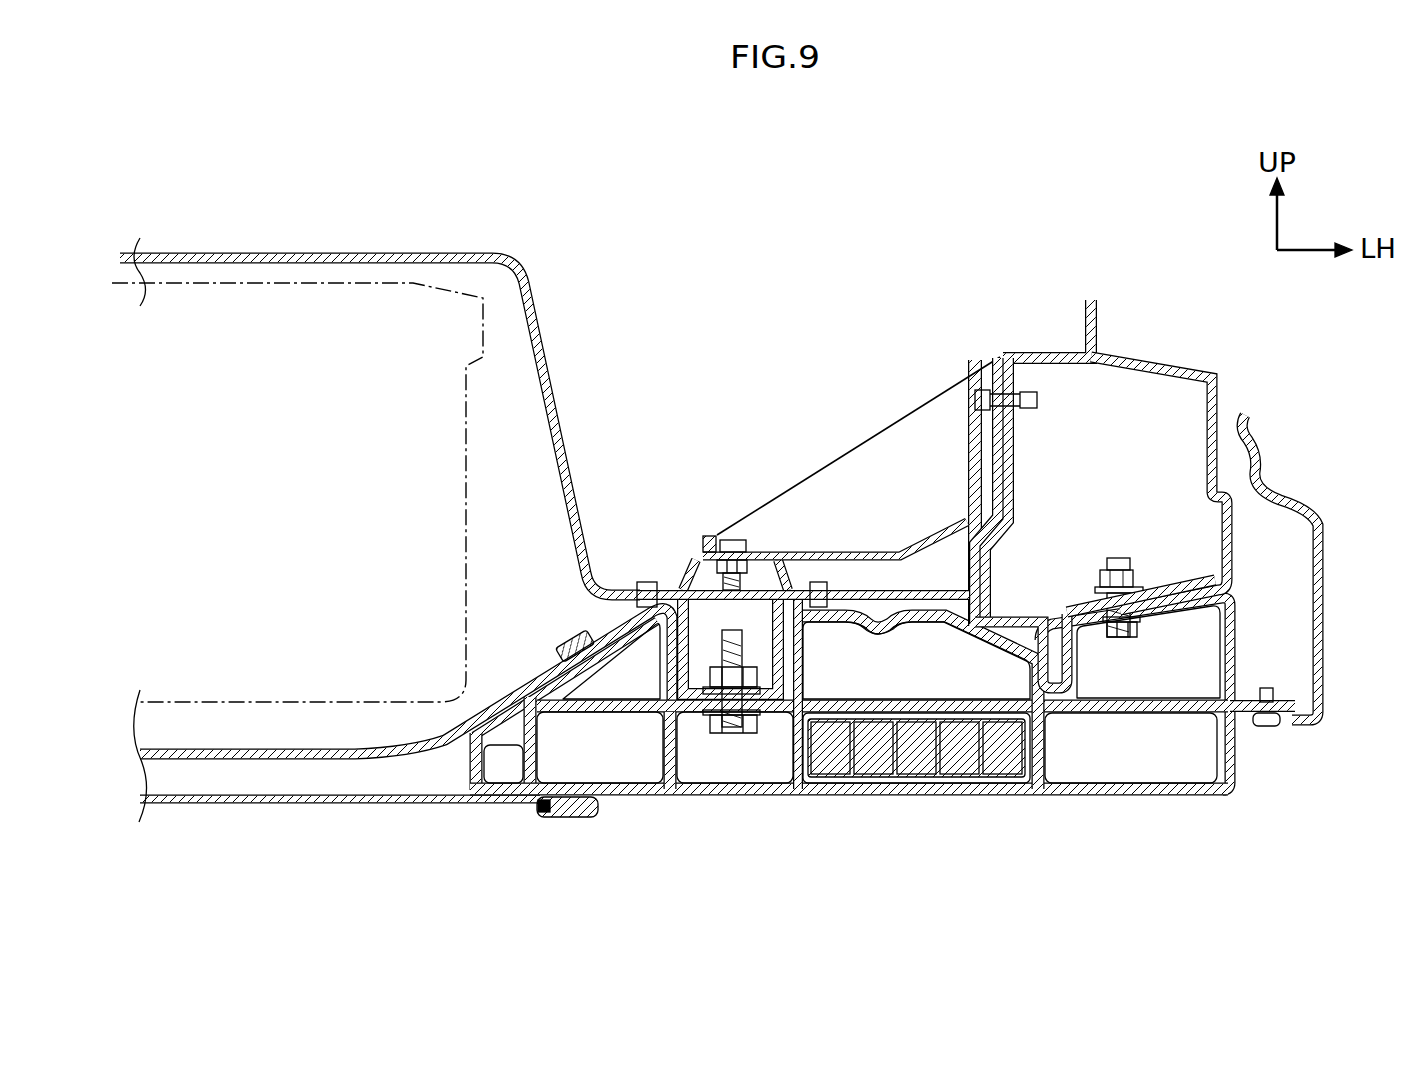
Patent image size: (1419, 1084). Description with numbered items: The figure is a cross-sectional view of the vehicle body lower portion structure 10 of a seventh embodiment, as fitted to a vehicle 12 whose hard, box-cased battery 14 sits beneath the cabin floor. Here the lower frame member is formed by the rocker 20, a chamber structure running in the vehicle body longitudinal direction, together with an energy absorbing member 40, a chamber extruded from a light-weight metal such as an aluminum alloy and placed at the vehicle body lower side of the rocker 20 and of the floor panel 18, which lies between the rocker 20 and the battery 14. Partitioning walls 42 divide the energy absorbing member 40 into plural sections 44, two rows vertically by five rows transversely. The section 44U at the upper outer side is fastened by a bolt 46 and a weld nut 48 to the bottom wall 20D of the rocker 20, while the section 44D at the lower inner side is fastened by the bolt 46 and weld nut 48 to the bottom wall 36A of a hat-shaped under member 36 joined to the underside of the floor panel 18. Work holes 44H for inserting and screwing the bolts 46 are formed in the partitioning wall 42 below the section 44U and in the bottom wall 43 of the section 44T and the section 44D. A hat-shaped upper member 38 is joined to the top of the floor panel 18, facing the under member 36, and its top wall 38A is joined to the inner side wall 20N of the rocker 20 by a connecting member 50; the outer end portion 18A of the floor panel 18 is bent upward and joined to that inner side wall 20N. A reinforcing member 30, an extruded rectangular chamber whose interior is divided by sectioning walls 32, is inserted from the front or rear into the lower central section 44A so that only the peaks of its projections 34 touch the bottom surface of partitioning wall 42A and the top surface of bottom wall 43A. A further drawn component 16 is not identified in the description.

The vehicle body lower portion structure 10 is at (1037, 815).
The vehicle 12 is at (814, 285).
The battery 14 is at (301, 272).
The floor panel 16 is at (350, 808).
The floor panel 18 is at (900, 585).
The vehicle transverse direction outer side end portion 18A is at (913, 507).
The rocker 20 is at (1155, 338).
The bottom wall 20D is at (1170, 585).
The inner side wall 20N is at (970, 522).
The reinforcing member 30 is at (1017, 800).
The sectioning walls 32 is at (890, 800).
The projections 34 is at (850, 700).
The under member 36 is at (688, 632).
The bottom wall 36A is at (767, 620).
The upper member 38 is at (792, 568).
The top wall 38A is at (712, 538).
The energy absorbing member 40 is at (1228, 806).
The partitioning walls 42 is at (855, 749).
The partitioning wall 42A is at (913, 698).
The bottom wall 43 is at (683, 800).
The bottom wall 43A is at (953, 800).
The sections 44 is at (612, 624).
The section 44A is at (928, 806).
The section 44D is at (773, 800).
The work holes 44H is at (760, 806).
The section 44T is at (1080, 805).
The section 44U is at (1248, 590).
The bolt 46 is at (733, 728).
The weld nut 48 is at (700, 598).
The connecting member 50 is at (937, 338).